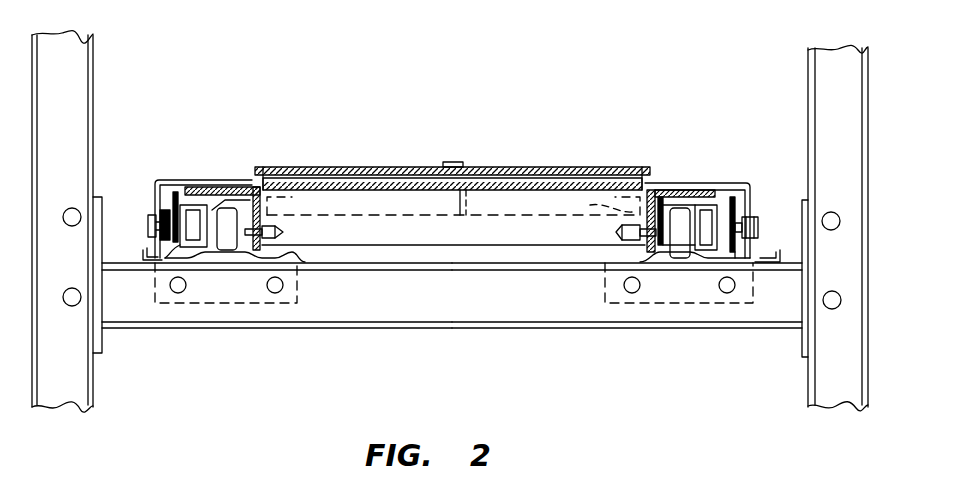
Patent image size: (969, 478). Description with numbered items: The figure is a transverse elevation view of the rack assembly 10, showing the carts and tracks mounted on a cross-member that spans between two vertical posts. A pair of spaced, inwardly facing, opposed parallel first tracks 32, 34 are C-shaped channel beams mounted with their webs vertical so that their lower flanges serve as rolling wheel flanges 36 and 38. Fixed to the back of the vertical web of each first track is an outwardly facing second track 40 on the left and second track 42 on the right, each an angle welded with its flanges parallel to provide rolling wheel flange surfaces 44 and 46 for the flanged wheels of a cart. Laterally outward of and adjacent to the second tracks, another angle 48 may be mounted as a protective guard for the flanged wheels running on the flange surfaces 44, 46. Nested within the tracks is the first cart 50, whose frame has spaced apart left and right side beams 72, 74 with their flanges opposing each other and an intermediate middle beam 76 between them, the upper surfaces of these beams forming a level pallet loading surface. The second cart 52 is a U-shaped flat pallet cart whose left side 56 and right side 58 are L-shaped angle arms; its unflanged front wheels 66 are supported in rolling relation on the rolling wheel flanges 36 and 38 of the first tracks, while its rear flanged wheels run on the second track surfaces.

The lighting fixture assembly 10 is at (450, 216).
The left first track 32 is at (192, 265).
The right first track 34 is at (710, 264).
The rolling wheel flange 36 is at (298, 268).
The rolling wheel flange 38 is at (610, 283).
The left second track 40 is at (203, 200).
The right second track 42 is at (700, 196).
The rolling wheel flange surface 44 is at (148, 240).
The rolling wheel flange surface 46 is at (752, 228).
The angle 48 is at (141, 262).
The first cart 50 is at (562, 165).
The second cart 52 is at (395, 178).
The left side 56 is at (152, 187).
The right side 58 is at (752, 192).
The front wheels 66 is at (250, 186).
The left side beam 72 is at (304, 207).
The right side beam 74 is at (597, 209).
The intermediate middle beam 76 is at (460, 212).